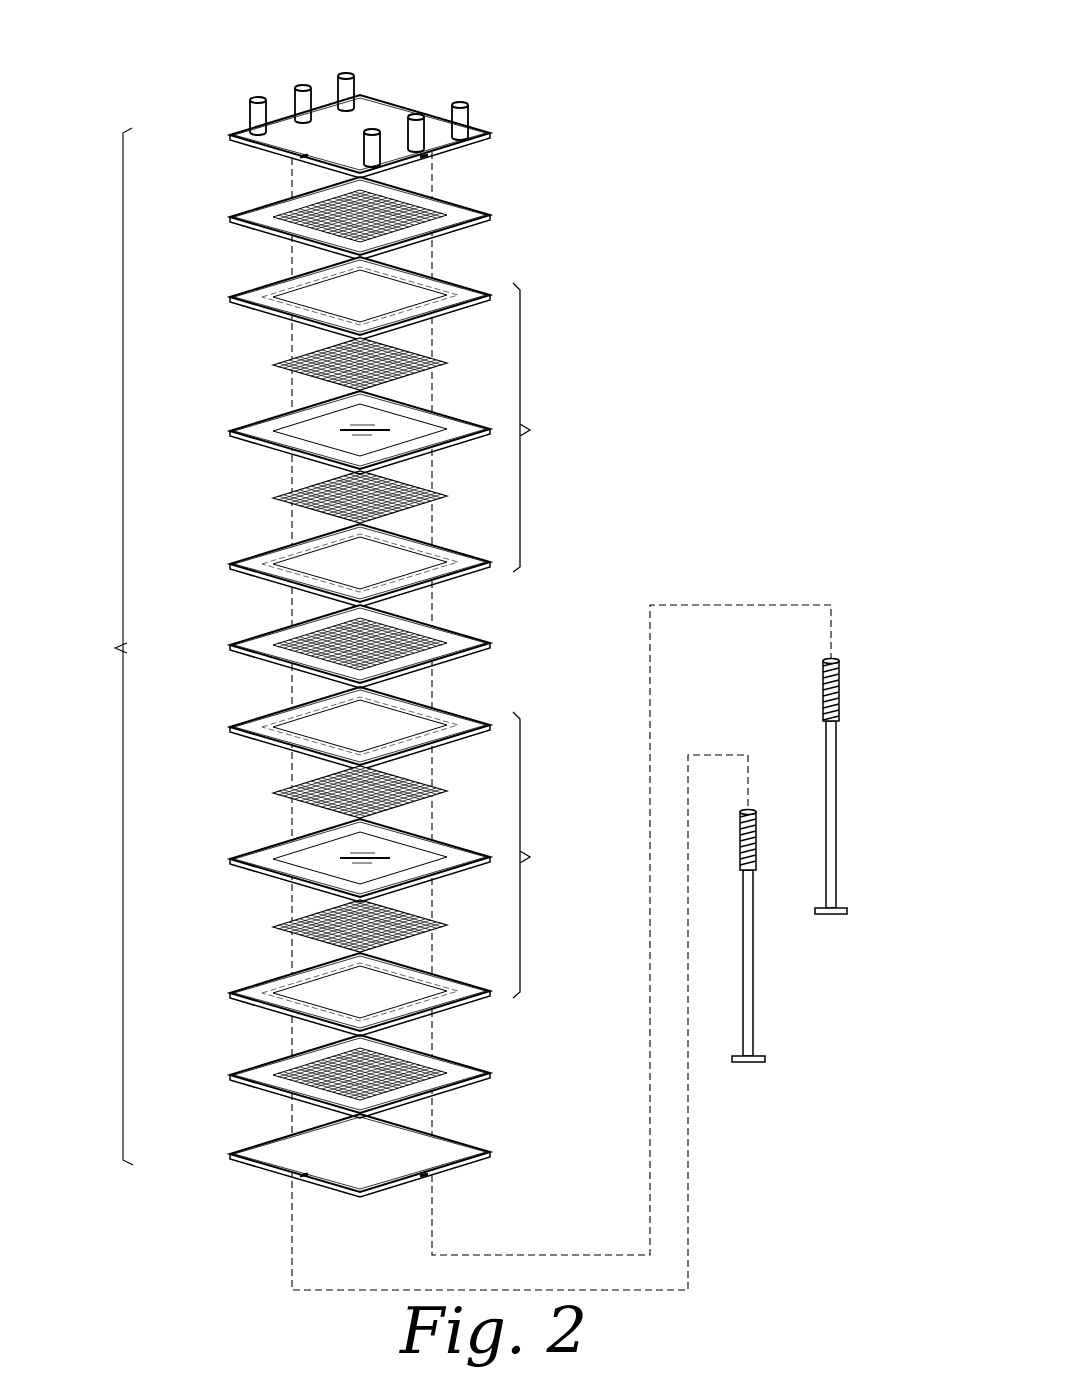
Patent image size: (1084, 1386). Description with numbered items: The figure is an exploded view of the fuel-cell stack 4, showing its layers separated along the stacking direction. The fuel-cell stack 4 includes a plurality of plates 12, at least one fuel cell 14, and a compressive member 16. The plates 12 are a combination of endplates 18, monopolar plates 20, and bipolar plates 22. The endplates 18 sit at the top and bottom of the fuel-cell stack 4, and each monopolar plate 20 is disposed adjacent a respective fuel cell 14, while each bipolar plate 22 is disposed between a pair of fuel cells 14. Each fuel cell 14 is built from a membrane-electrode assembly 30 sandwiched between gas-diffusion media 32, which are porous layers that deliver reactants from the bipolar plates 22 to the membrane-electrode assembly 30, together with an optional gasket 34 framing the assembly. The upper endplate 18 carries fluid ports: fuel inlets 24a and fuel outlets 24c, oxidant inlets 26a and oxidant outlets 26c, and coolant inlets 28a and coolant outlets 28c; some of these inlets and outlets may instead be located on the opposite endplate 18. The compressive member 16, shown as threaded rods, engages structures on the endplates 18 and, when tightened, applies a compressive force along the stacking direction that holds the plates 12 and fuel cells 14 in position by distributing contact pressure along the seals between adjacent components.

The fuel-cell stack 4 is at (109, 646).
The plates 12 is at (576, 626).
The fuel cell 14 is at (538, 640).
The compressive member 16 is at (836, 778).
The endplates 18 is at (233, 138).
The monopolar plates 20 is at (240, 212).
The bipolar plates 22 is at (250, 643).
The fuel inlets 24a is at (377, 130).
The fuel outlets 24c is at (350, 74).
The oxidant inlets 26a is at (467, 113).
The oxidant outlets 26c is at (250, 110).
The coolant inlets 28a is at (418, 115).
The coolant outlets 28c is at (297, 86).
The membrane-electrode assembly 30 is at (237, 428).
The gas-diffusion media 32 is at (283, 363).
The gasket 34 is at (250, 295).